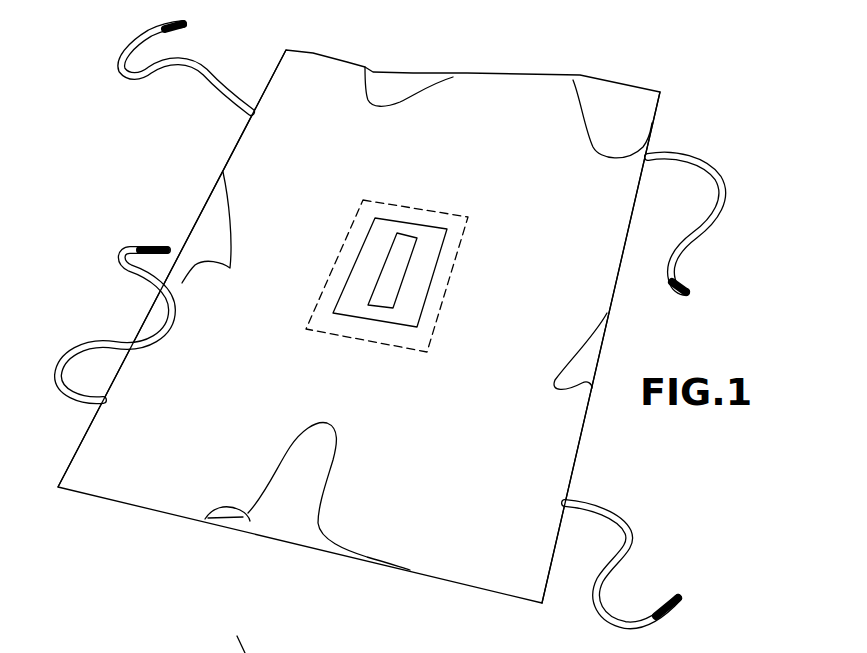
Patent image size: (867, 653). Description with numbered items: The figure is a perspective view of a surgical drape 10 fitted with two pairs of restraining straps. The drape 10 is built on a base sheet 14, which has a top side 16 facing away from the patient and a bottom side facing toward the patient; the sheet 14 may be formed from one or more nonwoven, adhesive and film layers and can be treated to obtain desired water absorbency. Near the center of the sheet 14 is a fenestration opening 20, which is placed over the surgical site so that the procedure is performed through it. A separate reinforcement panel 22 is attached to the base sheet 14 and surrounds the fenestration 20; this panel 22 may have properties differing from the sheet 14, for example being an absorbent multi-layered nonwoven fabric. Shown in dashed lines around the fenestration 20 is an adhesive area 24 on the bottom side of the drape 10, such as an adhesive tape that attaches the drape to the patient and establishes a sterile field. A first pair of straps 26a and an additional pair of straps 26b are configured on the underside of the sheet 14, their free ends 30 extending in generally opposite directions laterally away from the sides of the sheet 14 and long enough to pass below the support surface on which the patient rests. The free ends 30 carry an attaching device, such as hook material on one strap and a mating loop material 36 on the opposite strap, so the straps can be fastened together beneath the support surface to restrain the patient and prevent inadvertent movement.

The surgical drape 10 is at (676, 60).
The base sheet 14 is at (500, 90).
The top side 16 is at (217, 508).
The fenestration opening 20 is at (388, 265).
The reinforcement panel 22 is at (428, 252).
The adhesive area 24 is at (428, 310).
The straps 26a is at (217, 95).
The additional pair of straps 26b is at (150, 280).
The free ends 30 is at (190, 28).
The loop material 36 is at (676, 291).